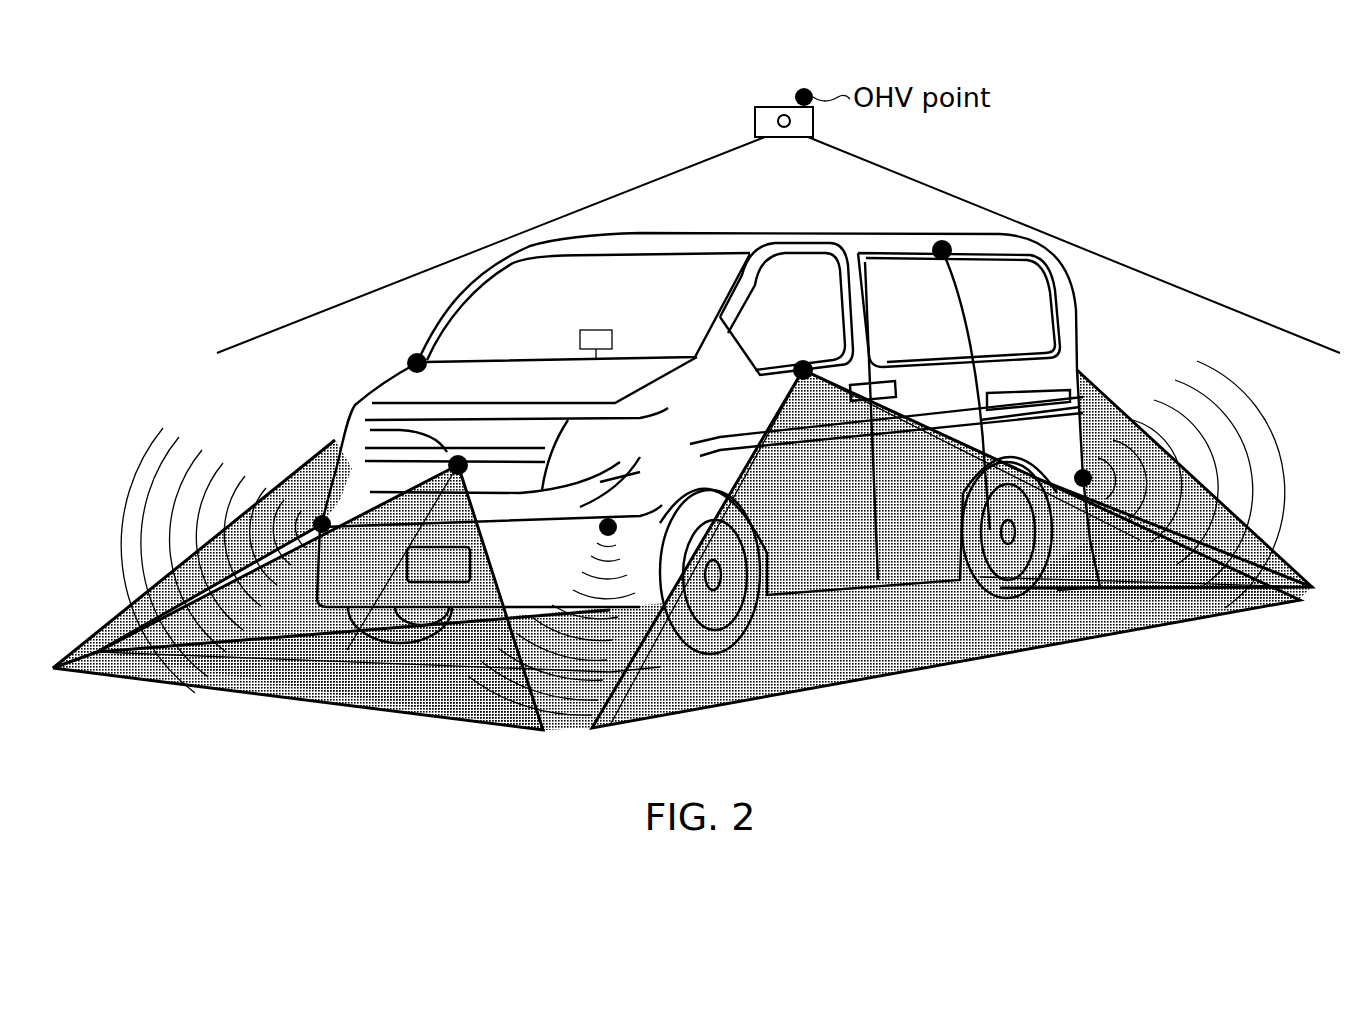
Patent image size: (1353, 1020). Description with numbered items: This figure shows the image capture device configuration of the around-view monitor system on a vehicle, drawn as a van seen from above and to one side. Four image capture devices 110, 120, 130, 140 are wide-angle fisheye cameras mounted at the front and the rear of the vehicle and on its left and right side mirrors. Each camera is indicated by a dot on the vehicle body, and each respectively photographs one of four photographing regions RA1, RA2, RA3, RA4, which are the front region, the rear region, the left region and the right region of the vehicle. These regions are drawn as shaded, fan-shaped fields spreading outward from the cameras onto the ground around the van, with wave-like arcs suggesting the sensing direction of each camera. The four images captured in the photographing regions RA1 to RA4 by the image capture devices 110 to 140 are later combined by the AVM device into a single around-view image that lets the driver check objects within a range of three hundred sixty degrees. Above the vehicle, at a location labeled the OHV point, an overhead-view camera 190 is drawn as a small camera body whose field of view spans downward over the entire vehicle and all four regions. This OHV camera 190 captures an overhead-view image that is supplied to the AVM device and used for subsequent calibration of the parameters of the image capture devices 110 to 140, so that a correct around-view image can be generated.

The image capture device 110 is at (450, 462).
The image capture device 120 is at (945, 248).
The image capture device 130 is at (803, 360).
The image capture device 140 is at (408, 363).
The overhead-view camera 190 is at (783, 105).
The photographing region RA1 is at (403, 697).
The photographing region RA2 is at (1190, 490).
The photographing region RA3 is at (850, 688).
The photographing region RA4 is at (253, 523).